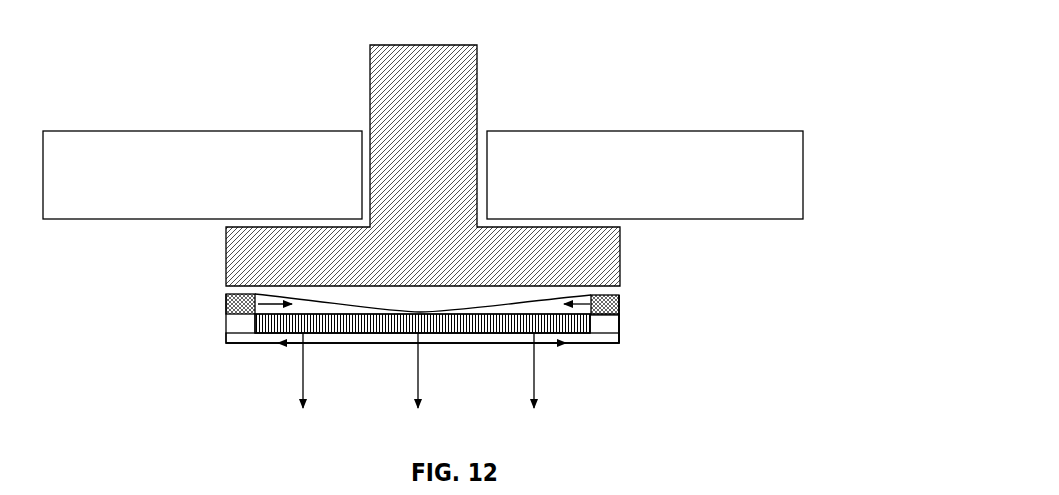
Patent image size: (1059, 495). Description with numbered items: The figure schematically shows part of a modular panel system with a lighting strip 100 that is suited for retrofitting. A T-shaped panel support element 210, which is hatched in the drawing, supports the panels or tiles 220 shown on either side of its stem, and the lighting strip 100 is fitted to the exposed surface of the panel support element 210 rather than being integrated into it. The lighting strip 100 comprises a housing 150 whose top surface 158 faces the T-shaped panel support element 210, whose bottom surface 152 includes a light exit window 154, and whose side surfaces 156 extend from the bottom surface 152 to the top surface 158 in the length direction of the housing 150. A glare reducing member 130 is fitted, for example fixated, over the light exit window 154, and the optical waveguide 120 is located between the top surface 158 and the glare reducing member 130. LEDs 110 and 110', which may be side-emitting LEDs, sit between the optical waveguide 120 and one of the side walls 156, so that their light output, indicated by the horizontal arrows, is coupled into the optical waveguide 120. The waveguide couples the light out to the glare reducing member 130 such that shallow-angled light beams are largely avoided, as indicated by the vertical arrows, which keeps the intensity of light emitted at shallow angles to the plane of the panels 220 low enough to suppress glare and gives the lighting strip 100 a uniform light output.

The lighting strip 100 is at (196, 365).
The LED 110 is at (259, 353).
The LED 110' is at (638, 301).
The optical waveguide 120 is at (320, 303).
The glare reducing member 130 is at (362, 325).
The housing 150 is at (620, 343).
The bottom surface 152 is at (593, 343).
The light exit window 154 is at (507, 343).
The side surface 156 is at (620, 331).
The top surface 158 is at (455, 293).
The panel support element 210 is at (460, 70).
The panel or tile 220 is at (727, 141).